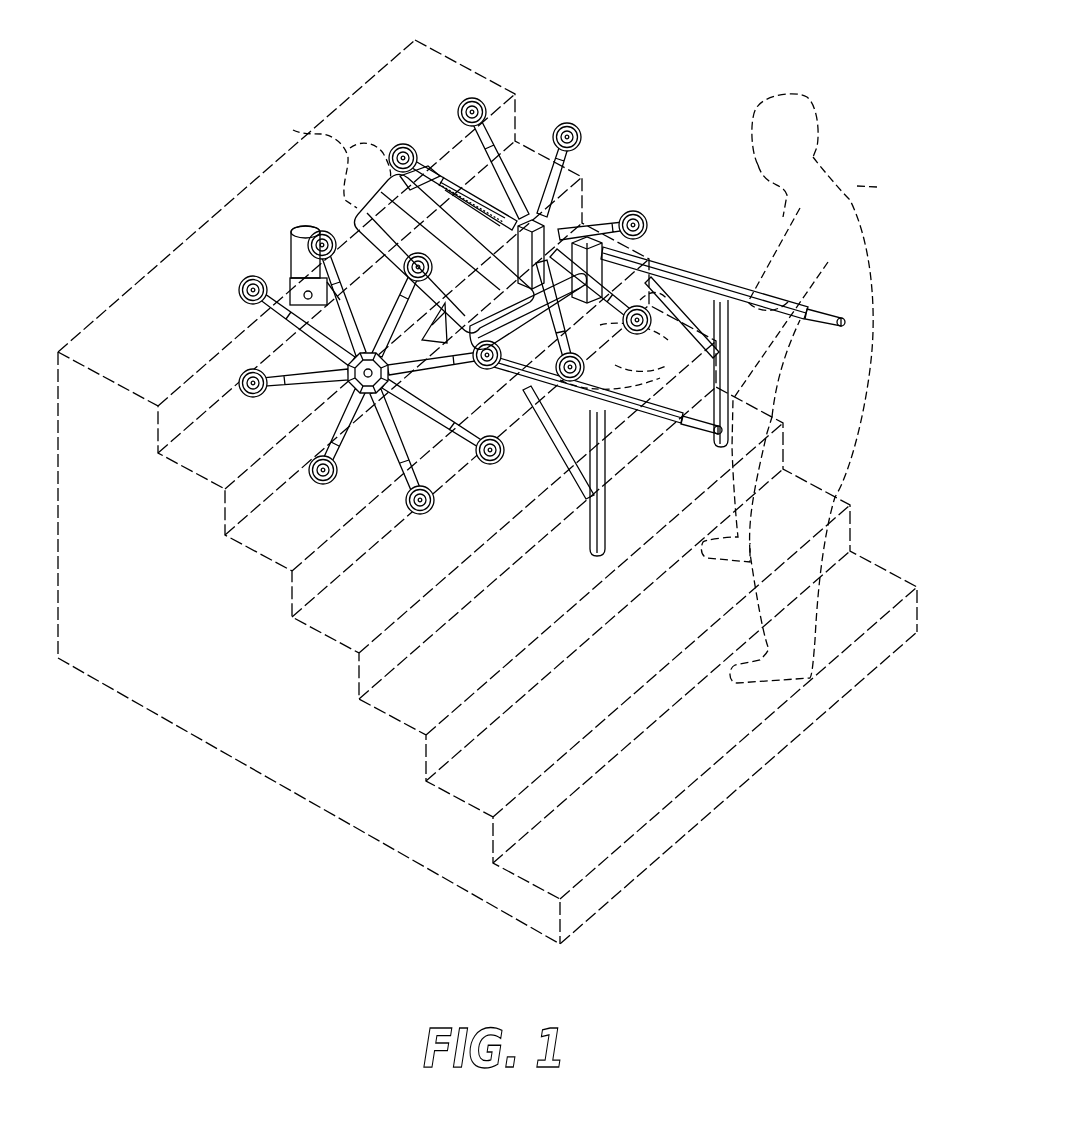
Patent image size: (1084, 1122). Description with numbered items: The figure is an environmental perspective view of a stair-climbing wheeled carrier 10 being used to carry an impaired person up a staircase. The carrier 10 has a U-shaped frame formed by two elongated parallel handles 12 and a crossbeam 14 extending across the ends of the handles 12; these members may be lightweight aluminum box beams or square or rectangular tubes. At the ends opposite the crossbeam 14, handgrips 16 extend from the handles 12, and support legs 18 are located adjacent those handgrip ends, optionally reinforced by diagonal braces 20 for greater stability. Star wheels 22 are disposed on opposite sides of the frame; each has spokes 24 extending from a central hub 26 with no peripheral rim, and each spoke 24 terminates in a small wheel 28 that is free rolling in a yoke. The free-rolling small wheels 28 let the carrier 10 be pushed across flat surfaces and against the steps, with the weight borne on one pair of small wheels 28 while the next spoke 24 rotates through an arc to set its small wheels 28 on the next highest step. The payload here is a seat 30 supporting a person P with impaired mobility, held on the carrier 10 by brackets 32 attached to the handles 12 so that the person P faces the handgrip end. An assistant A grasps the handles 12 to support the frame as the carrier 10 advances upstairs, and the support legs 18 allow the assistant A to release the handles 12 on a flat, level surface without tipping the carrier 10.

The stair-climbing wheeled carrier 10 is at (560, 311).
The handles 12 is at (712, 252).
The crossbeam 14 is at (340, 271).
The handgrips 16 is at (847, 318).
The support legs 18 is at (733, 400).
The diagonal braces 20 is at (553, 443).
The star wheels 22 is at (436, 317).
The spokes 24 is at (470, 150).
The central hub 26 is at (358, 405).
The small wheels 28 is at (623, 210).
The seat 30 is at (481, 284).
The brackets 32 is at (545, 320).
The assistant A is at (848, 195).
The person P is at (293, 130).